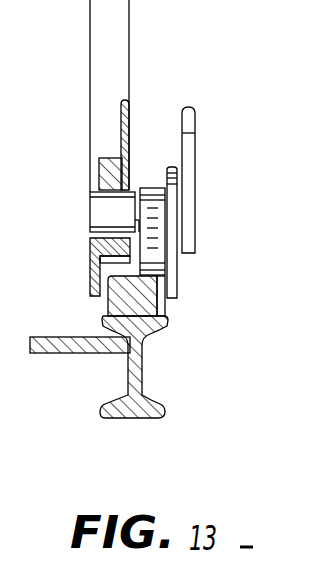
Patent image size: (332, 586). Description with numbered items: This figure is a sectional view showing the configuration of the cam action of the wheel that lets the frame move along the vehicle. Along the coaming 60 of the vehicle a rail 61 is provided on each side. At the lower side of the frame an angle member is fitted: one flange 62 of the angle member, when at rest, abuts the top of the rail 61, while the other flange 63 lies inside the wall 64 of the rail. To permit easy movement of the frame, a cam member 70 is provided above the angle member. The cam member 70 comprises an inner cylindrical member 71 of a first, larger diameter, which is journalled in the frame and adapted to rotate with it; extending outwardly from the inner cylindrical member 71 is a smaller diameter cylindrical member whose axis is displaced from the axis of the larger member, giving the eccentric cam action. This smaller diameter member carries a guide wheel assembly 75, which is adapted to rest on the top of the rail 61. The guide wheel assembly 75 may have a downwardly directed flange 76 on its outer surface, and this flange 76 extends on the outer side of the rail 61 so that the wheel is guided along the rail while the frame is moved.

The coaming 60 is at (137, 394).
The rail 61 is at (160, 305).
The flange 62 is at (97, 255).
The flange 63 is at (90, 285).
The wall 64 is at (107, 306).
The cam member 70 is at (150, 143).
The inner cylindrical member 71 is at (112, 205).
The guide wheel assembly 75 is at (160, 205).
The flange 76 is at (177, 288).